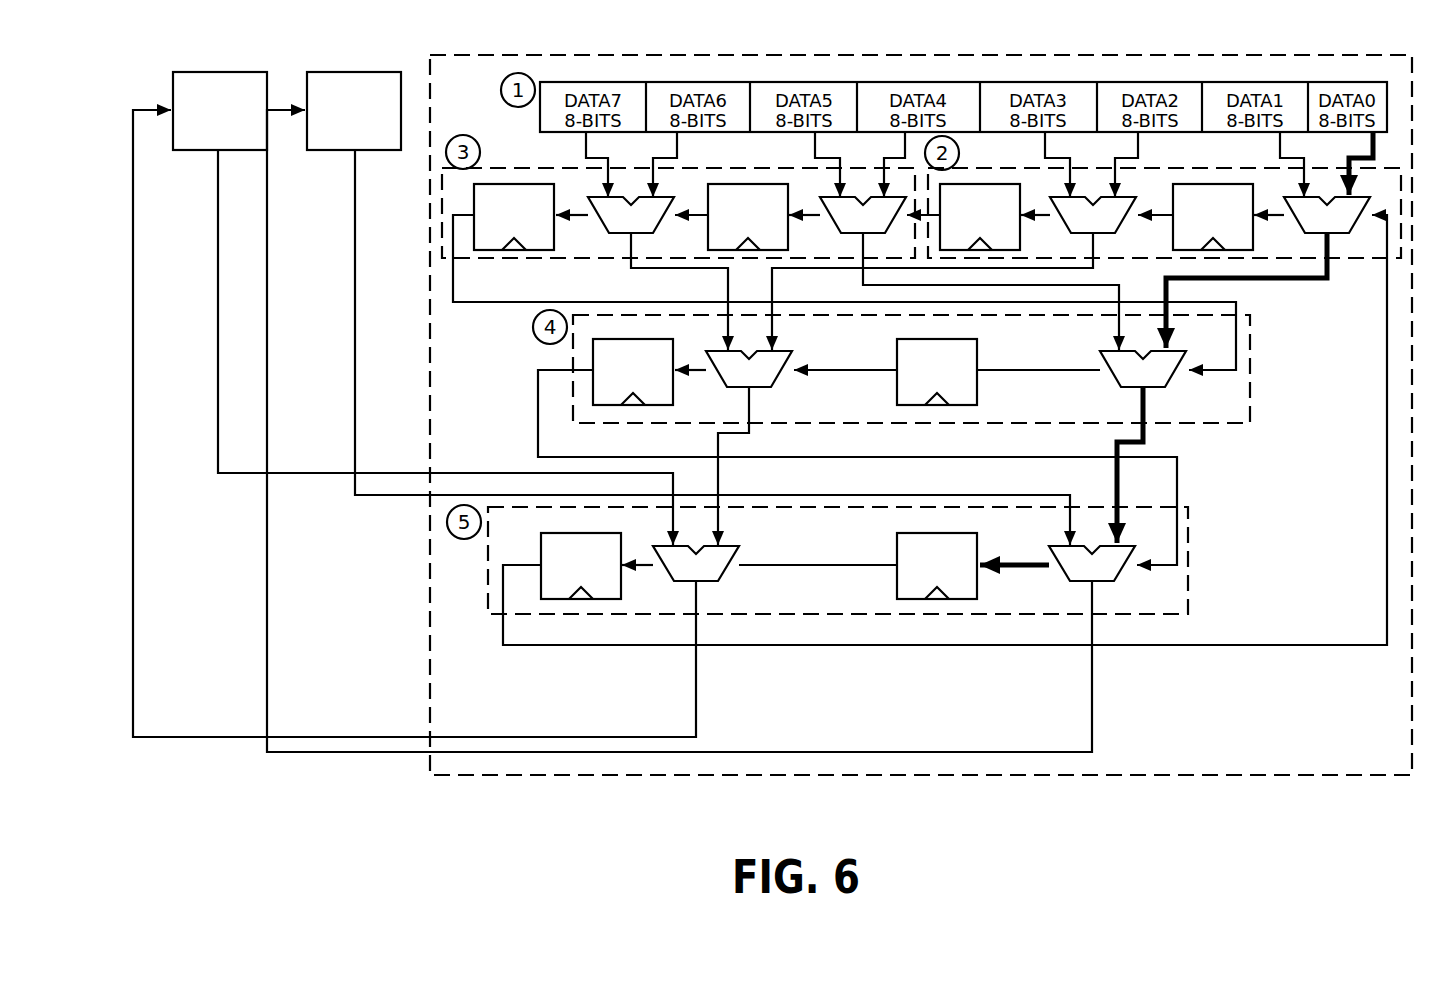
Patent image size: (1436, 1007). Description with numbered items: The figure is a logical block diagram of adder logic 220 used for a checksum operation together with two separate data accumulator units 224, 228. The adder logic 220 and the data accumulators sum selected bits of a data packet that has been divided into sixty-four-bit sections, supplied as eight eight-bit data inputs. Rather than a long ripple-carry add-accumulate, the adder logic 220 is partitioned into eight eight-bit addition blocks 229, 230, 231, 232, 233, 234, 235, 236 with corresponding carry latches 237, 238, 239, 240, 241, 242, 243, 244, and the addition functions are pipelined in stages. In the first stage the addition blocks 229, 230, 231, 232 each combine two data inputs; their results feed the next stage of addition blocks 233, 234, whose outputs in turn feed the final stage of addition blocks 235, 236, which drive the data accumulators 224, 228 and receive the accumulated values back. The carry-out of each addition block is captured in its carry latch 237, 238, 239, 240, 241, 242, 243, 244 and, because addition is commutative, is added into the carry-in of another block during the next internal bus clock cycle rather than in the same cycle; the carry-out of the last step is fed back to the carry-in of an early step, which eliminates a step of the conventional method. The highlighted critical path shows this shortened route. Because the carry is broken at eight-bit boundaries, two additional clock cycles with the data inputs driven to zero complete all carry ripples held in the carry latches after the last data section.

The adder logic 220 is at (783, 777).
The data accumulator unit 224 is at (205, 71).
The data accumulator unit 228 is at (333, 71).
The 8-bit addition block 229 is at (652, 233).
The 8-bit addition block 230 is at (884, 233).
The 8-bit addition block 231 is at (1114, 233).
The 8-bit addition block 232 is at (1348, 233).
The 8-bit addition block 233 is at (770, 387).
The 8-bit addition block 234 is at (1164, 387).
The 8-bit addition block 235 is at (717, 581).
The 8-bit addition block 236 is at (1113, 581).
The carry latch 237 is at (556, 244).
The carry latch 238 is at (789, 244).
The carry latch 239 is at (1021, 244).
The carry latch 240 is at (1254, 244).
The carry latch 241 is at (674, 399).
The carry latch 242 is at (978, 399).
The carry latch 243 is at (622, 592).
The carry latch 244 is at (978, 592).